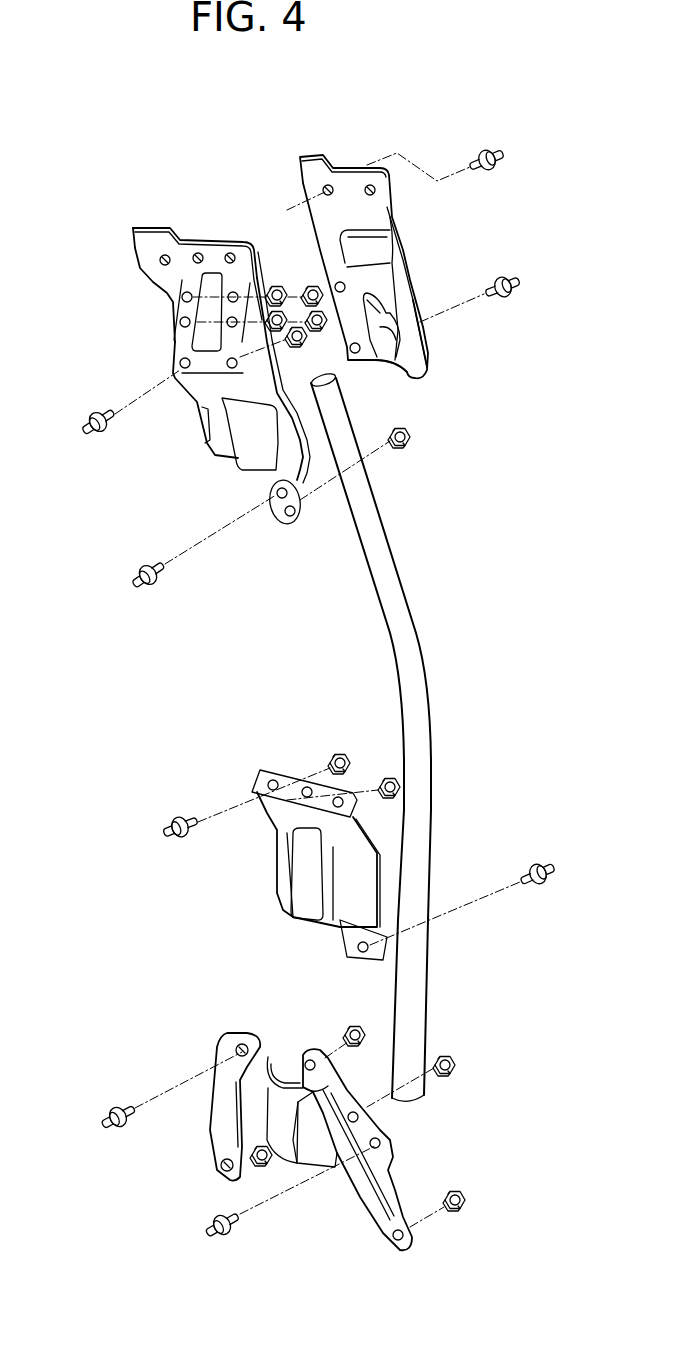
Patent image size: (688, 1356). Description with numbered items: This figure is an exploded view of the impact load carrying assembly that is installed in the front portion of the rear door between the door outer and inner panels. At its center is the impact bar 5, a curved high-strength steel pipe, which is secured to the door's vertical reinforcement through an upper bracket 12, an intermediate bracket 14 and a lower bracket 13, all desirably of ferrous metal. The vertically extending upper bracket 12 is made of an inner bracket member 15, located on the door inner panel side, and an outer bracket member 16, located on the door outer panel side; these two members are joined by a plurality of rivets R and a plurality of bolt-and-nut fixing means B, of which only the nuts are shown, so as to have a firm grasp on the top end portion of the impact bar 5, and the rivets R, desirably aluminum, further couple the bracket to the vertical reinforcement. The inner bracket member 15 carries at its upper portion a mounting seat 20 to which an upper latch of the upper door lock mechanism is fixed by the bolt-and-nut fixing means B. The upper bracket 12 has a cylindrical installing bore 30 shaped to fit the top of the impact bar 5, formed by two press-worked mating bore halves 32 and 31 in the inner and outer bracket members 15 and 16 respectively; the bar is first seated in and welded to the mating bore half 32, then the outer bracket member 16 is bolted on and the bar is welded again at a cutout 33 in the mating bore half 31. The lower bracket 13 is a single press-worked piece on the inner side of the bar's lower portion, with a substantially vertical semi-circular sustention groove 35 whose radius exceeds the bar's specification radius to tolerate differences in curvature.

The impact bar 5 is at (417, 633).
The upper bracket 12 is at (243, 205).
The lower bracket 13 is at (210, 1147).
The intermediate bracket 14 is at (273, 910).
The inner bracket member 15 is at (133, 229).
The outer bracket member 16 is at (347, 177).
The mounting seat 20 is at (173, 337).
The cylindrical installing bore 30 is at (273, 434).
The mating bore half 31 is at (377, 362).
The mating bore half 32 is at (243, 467).
The cutout 33 is at (427, 358).
The sustention groove 35 is at (293, 1067).
The bolt-and-nut fixing means B is at (348, 348).
The rivets R is at (500, 166).